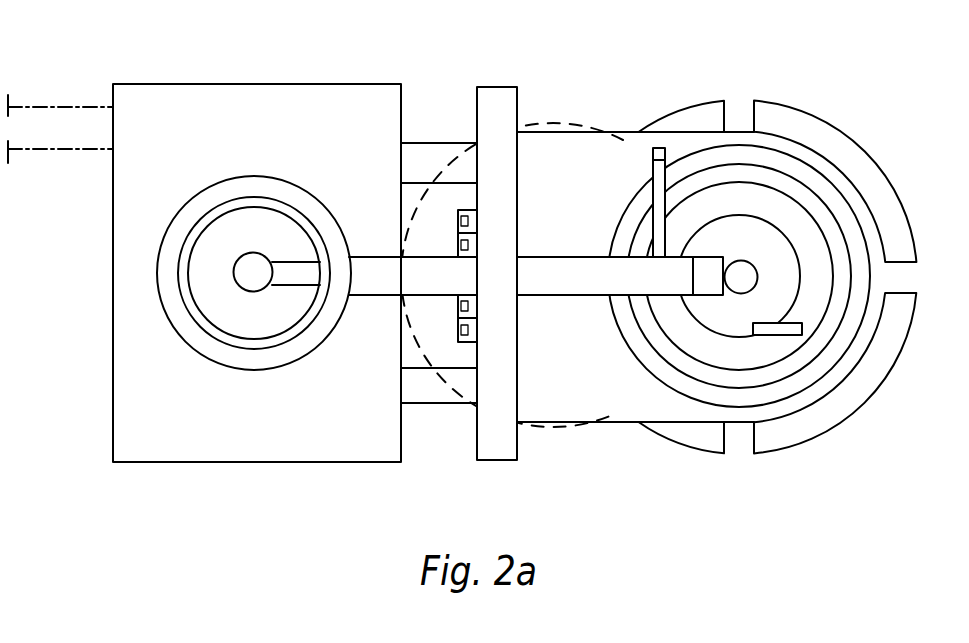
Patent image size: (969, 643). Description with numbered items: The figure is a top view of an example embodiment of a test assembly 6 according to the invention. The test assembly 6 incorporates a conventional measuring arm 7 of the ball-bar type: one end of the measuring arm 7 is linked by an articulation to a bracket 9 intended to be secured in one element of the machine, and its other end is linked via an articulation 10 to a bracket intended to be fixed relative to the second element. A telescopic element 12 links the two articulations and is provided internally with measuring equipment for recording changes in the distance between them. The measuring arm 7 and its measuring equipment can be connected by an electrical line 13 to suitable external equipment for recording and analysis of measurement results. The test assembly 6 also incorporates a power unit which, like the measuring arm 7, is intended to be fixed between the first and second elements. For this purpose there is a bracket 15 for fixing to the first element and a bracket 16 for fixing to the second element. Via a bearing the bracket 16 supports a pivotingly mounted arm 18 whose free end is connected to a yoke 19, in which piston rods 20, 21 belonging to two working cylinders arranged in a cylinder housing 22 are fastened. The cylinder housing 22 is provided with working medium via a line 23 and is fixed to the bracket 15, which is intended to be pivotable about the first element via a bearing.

The test assembly 6 is at (596, 83).
The measuring arm 7 is at (545, 222).
The bracket 9 is at (250, 263).
The articulation 10 is at (745, 267).
The telescopic element 12 is at (364, 287).
The electrical line 13 is at (652, 168).
The bracket 15 is at (300, 207).
The bracket 16 is at (893, 157).
The arm 18 is at (579, 413).
The yoke 19 is at (500, 455).
The piston rod 20 is at (457, 396).
The piston rod 21 is at (447, 155).
The cylinder housing 22 is at (133, 400).
The line 23 is at (92, 147).